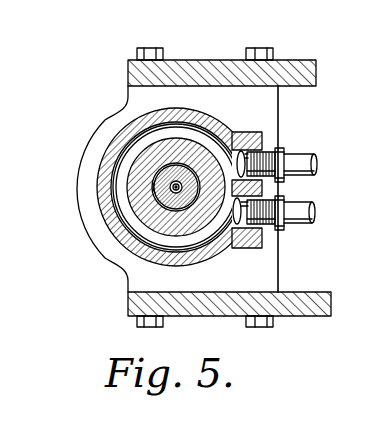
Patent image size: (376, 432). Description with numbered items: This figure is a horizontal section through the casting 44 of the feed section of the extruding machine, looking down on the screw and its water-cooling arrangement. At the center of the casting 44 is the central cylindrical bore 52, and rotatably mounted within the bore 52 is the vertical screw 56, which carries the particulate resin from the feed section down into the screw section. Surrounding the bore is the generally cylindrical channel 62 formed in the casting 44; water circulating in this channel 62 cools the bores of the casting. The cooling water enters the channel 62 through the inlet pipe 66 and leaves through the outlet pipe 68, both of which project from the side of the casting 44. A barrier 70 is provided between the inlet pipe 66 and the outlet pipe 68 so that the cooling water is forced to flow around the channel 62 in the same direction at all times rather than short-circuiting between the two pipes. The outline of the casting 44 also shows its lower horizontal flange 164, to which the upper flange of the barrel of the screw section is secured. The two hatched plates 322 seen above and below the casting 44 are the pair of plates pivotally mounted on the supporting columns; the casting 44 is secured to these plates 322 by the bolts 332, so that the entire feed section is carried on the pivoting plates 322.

The casting 44 is at (307, 124).
The central cylindrical bore 52 is at (150, 205).
The vertical screw 56 is at (227, 126).
The cylindrical channel 62 is at (137, 145).
The inlet pipe 66 is at (301, 155).
The outlet pipe 68 is at (299, 227).
The barrier 70 is at (249, 134).
The lower horizontal flange 164 is at (88, 168).
The plates 322 is at (298, 317).
The bolts 332 is at (139, 48).